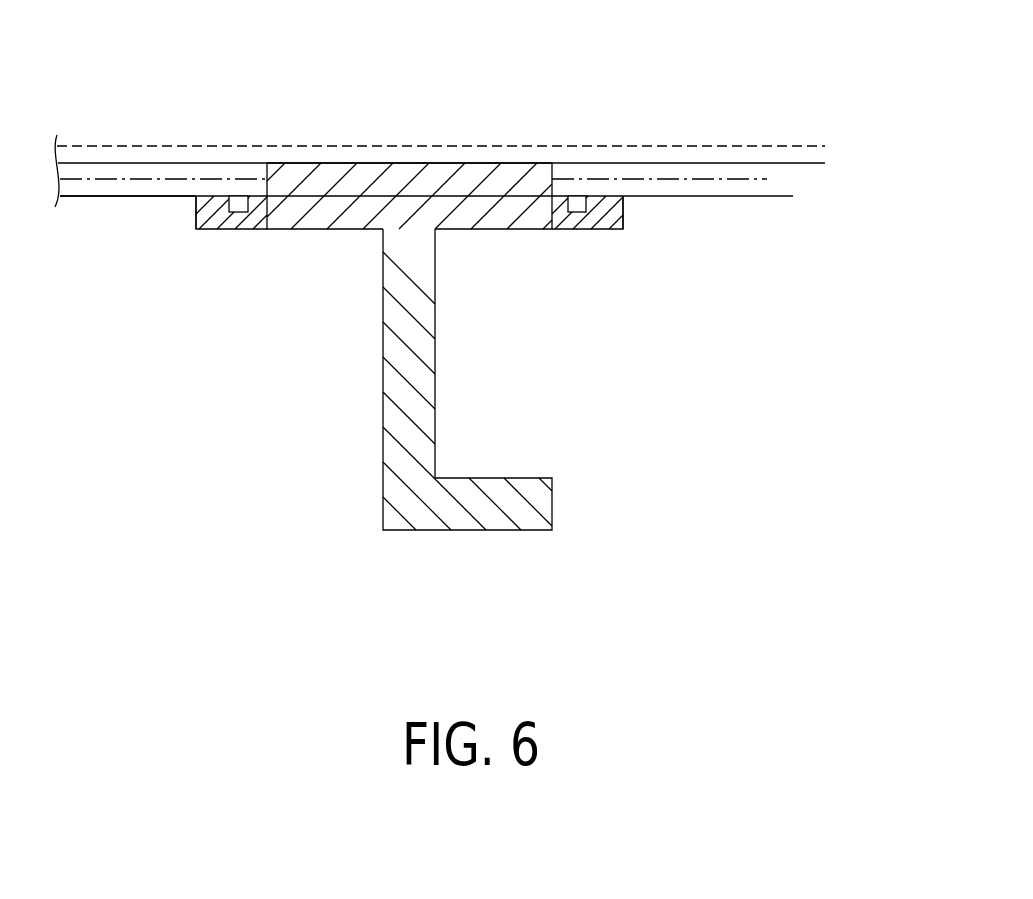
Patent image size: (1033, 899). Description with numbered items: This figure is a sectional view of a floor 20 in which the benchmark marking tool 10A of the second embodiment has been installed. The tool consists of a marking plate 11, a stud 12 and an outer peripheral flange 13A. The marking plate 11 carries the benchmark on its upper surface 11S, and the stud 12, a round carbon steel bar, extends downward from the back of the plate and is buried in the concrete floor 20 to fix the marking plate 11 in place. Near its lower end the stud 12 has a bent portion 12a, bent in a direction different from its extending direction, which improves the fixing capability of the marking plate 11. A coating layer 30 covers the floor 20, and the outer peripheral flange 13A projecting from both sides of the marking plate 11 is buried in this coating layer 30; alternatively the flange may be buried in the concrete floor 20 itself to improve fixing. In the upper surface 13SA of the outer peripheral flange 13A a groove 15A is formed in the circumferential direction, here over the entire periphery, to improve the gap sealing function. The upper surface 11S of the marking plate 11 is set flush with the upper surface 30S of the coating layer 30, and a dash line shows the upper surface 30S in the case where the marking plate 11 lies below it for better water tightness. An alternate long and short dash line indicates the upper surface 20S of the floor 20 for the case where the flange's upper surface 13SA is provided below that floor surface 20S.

The benchmark marking tool 10A is at (509, 90).
The coating layer 30 is at (777, 163).
The upper surface of coating layer 30S is at (590, 163).
The upper surface of floor 20S is at (92, 196).
The floor 20 is at (150, 401).
The marking plate 11 is at (327, 229).
The upper surface of marking plate 11S is at (411, 163).
The stud 12 is at (436, 381).
The bent portion 12a is at (553, 503).
The outer peripheral flange 13A is at (203, 229).
The upper surface of outer peripheral flange 13SA is at (197, 211).
The groove 15A is at (243, 203).